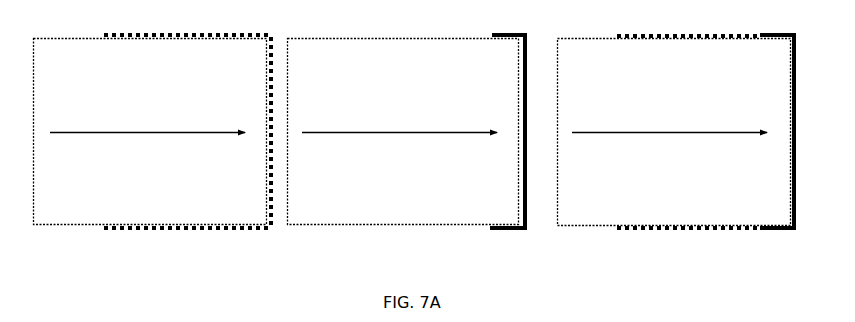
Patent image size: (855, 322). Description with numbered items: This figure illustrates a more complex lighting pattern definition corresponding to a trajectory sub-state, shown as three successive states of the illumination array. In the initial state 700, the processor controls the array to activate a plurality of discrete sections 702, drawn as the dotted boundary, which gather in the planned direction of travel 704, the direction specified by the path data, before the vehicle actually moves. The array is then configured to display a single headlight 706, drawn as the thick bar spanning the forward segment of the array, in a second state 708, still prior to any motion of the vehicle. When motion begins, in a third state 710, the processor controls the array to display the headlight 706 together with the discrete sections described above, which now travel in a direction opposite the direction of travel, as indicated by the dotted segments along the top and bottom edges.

The initial state 700 is at (150, 132).
The discrete sections 702 is at (148, 228).
The planned direction of travel 704 is at (86, 132).
The single headlight 706 is at (518, 90).
The second state 708 is at (403, 132).
The third state 710 is at (674, 132).